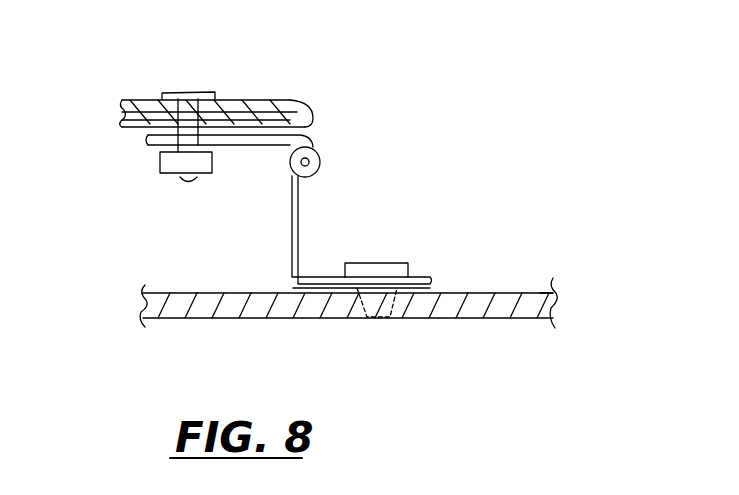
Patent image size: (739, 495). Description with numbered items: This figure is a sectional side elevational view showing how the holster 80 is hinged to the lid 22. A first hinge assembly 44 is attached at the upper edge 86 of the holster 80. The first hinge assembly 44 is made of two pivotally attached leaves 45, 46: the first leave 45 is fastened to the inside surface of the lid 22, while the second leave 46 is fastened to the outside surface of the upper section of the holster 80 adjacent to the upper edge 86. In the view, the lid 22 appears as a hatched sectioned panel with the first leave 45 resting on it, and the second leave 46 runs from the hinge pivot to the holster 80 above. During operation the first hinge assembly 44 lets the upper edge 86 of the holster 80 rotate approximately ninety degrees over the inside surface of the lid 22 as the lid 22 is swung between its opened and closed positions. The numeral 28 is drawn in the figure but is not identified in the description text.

The lid 22 is at (557, 292).
The substrate 28 is at (183, 293).
The first hinge assembly 44 is at (342, 90).
The first leave 45 is at (413, 272).
The second leave 46 is at (268, 140).
The holster 80 is at (147, 98).
The upper edge 86 is at (313, 117).